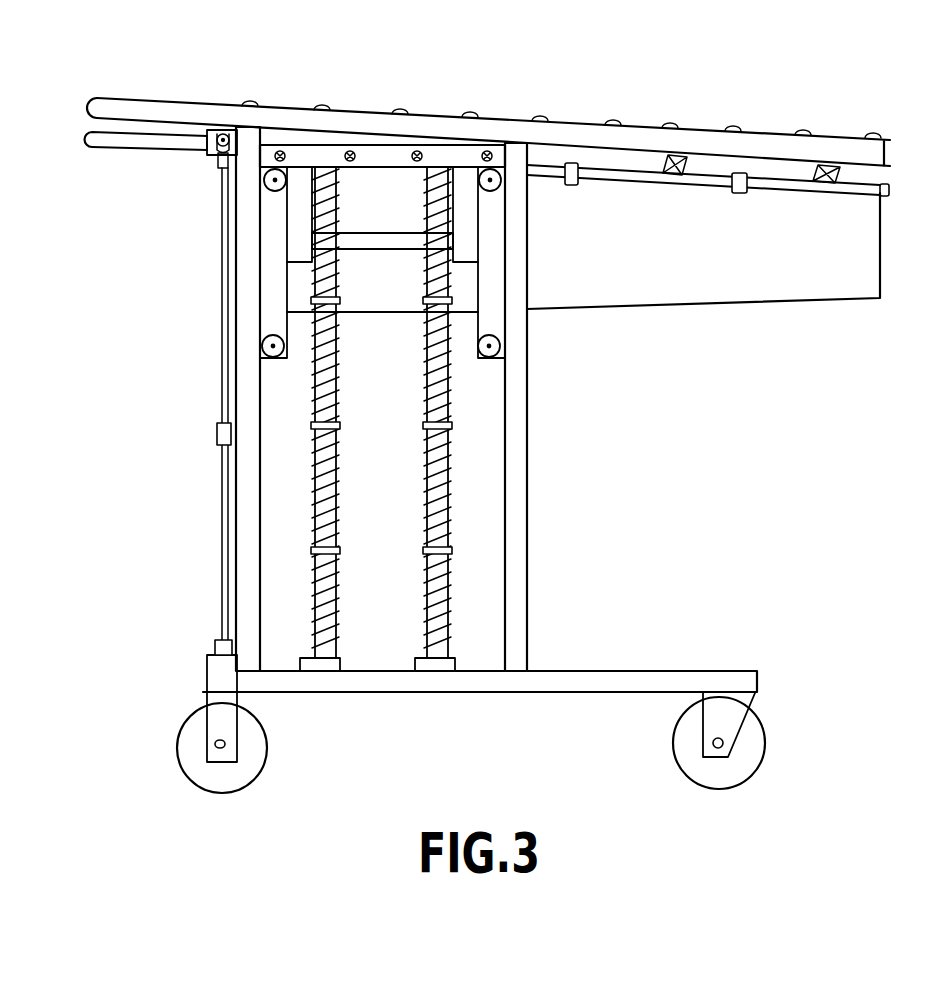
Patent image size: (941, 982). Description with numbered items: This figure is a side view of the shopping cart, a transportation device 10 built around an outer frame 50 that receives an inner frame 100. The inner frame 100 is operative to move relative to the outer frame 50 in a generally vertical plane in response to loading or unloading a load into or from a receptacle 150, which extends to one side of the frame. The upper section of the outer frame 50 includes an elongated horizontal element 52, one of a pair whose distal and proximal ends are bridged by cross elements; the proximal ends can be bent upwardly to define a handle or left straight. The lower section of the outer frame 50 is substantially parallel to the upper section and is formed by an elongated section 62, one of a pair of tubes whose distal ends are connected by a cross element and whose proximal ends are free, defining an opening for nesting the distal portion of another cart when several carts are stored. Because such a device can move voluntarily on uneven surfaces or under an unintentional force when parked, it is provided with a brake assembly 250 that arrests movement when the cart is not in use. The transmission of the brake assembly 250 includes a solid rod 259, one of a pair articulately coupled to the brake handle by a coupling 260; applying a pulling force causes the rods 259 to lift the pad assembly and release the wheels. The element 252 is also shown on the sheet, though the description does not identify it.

The transportation device 10 is at (174, 356).
The outer frame 50 is at (434, 108).
The elongated horizontal element 52 is at (653, 137).
The elongated section 62 is at (625, 680).
The inner frame 100 is at (395, 318).
The receptacle 150 is at (754, 311).
The brake assembly 250 is at (212, 160).
The handle rail 252 is at (112, 150).
The solid rod 259 is at (220, 257).
The coupling 260 is at (223, 134).